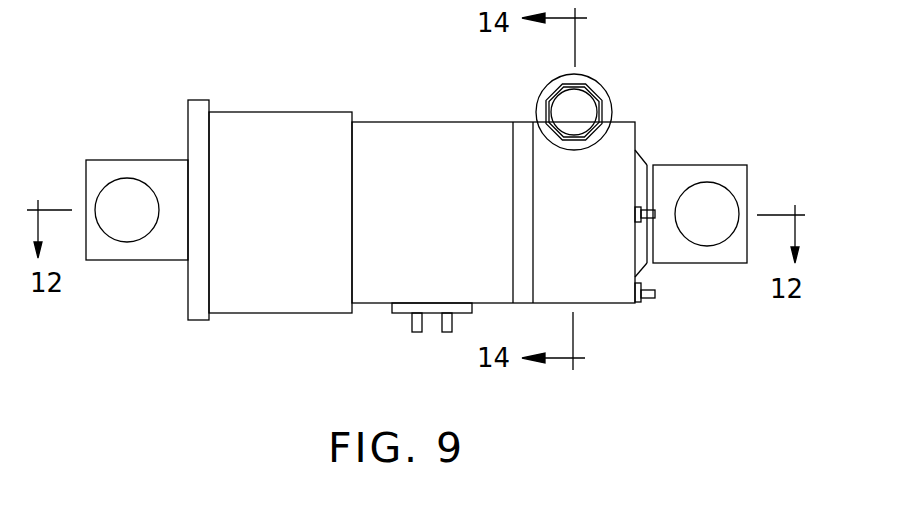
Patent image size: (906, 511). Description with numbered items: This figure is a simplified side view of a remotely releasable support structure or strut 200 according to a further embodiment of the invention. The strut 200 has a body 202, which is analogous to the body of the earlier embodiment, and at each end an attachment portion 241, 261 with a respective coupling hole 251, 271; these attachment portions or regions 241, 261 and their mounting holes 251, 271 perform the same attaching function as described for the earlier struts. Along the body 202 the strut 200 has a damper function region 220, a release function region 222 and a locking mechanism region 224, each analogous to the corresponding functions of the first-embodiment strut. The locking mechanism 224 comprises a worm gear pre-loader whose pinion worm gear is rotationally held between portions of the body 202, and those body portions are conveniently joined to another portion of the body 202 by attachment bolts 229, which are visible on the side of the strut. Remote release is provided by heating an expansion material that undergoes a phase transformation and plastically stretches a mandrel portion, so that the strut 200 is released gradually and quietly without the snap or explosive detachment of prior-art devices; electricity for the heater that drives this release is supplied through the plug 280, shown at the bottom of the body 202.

The support strut 200 is at (427, 222).
The body 202 is at (394, 103).
The damper function region 220 is at (272, 95).
The release function region 222 is at (469, 86).
The locking mechanism region 224 is at (624, 88).
The attachment bolts 229 is at (652, 207).
The attachment portion 241 is at (148, 262).
The coupling hole 251 is at (98, 205).
The attachment portion 261 is at (680, 265).
The coupling hole 271 is at (678, 200).
The plug 280 is at (410, 323).